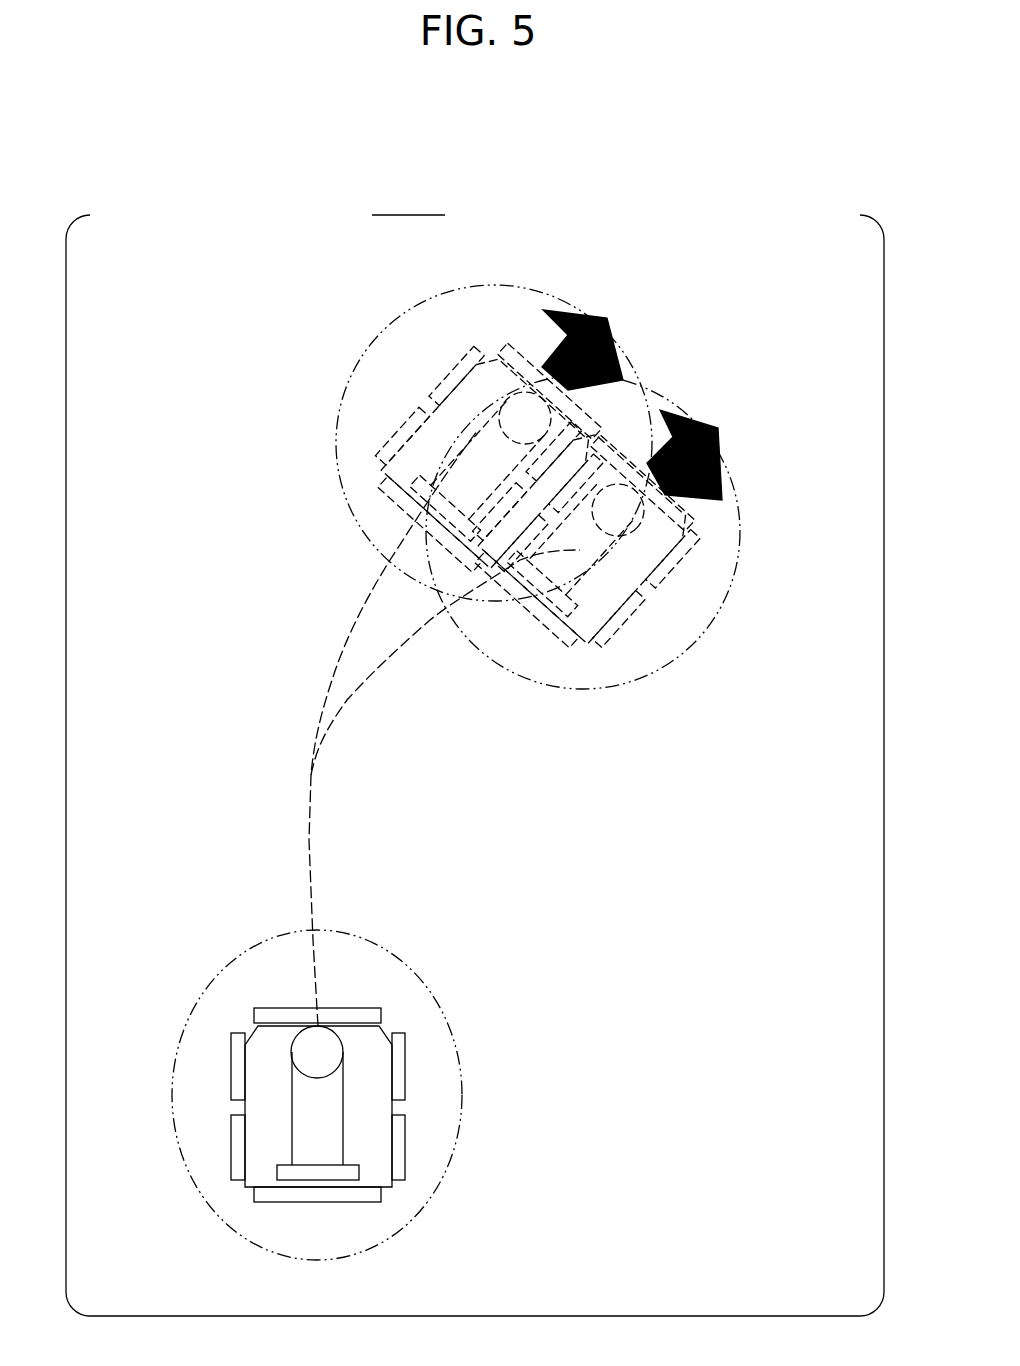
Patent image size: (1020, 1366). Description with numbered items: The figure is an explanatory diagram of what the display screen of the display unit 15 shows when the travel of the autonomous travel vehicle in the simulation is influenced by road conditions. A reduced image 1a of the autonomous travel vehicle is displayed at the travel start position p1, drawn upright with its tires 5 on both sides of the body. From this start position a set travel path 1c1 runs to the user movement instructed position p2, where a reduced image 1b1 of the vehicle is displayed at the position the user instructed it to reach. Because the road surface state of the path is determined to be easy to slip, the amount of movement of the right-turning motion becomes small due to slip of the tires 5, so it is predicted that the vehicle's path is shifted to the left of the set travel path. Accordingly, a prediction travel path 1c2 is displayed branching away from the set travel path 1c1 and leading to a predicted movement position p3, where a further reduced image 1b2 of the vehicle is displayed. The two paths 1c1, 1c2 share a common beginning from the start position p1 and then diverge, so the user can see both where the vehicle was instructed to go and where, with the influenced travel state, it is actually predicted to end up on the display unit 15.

The display unit 15 is at (473, 215).
The reduced image of the autonomous travel vehicle 1a is at (339, 1062).
The reduced image at user movement instructed position 1b1 is at (657, 575).
The reduced image at predicted movement position 1b2 is at (458, 388).
The set travel path 1c1 is at (367, 680).
The prediction travel path 1c2 is at (338, 647).
The travel start position p1 is at (445, 1022).
The user movement instructed position p2 is at (663, 660).
The predicted movement position p3 is at (340, 455).
The tires 5 is at (231, 1077).